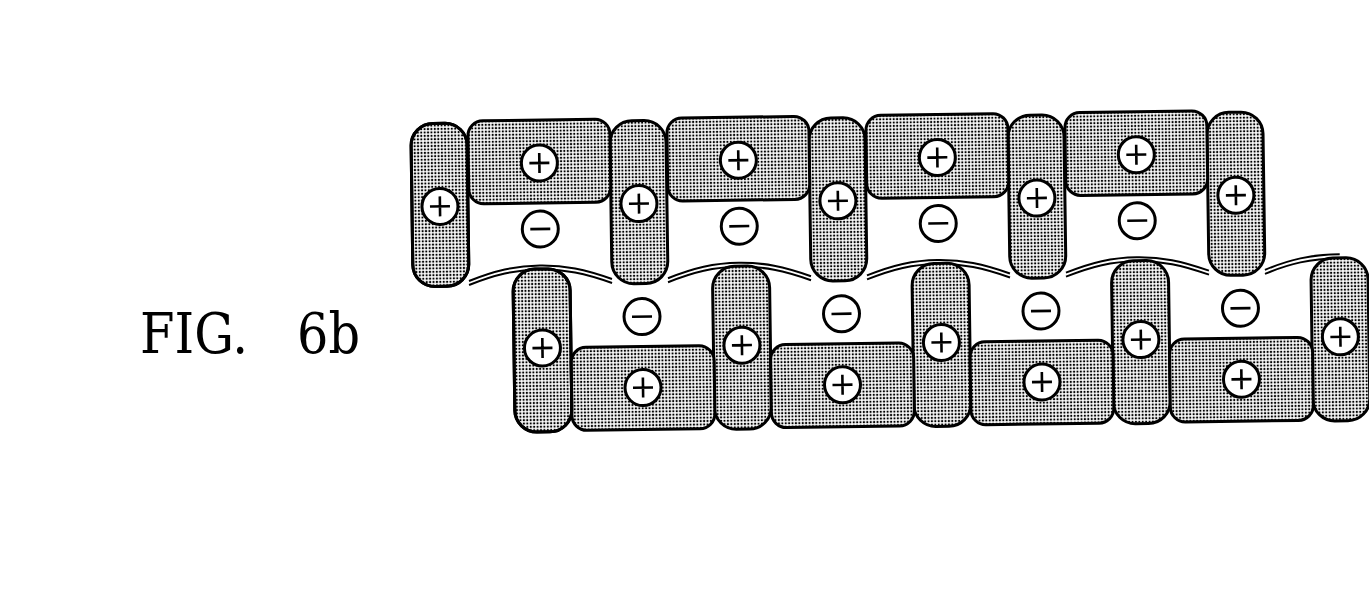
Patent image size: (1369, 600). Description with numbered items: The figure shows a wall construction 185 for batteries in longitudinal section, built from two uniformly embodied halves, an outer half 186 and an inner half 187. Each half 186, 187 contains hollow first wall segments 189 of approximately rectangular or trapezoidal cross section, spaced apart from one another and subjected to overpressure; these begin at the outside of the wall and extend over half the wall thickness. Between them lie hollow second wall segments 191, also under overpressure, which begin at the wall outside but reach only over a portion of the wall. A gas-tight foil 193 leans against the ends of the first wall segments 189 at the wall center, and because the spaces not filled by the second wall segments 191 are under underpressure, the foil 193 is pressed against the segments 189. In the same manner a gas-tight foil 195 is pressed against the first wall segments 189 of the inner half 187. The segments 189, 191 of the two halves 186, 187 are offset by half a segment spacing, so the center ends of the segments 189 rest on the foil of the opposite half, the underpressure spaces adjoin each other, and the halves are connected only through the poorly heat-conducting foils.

The wall construction 185 is at (963, 106).
The outer half 186 is at (413, 168).
The inner half 187 is at (518, 390).
The first wall segments 189 is at (444, 121).
The second wall segments 191 is at (531, 121).
The gas-tight foil 193 is at (493, 278).
The gas-tight foil 195 is at (690, 281).